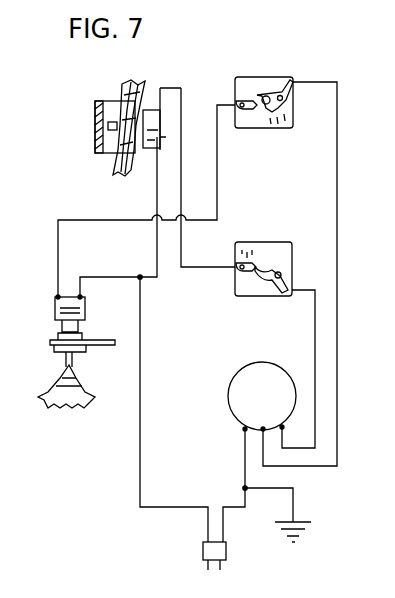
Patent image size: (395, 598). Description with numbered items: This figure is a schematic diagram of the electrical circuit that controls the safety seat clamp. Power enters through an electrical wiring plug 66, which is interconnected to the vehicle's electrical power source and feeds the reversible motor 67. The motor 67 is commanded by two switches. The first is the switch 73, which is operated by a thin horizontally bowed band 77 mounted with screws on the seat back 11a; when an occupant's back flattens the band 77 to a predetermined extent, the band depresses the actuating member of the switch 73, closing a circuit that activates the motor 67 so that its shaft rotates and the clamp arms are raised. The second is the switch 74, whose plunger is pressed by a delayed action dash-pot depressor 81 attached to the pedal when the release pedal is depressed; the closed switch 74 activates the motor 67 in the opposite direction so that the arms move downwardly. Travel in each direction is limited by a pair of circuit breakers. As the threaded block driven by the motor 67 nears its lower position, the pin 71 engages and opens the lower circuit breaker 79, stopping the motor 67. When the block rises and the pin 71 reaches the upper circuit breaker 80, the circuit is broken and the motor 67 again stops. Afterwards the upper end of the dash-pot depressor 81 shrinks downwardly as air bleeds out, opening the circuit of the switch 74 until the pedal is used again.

The seat back 11a is at (124, 88).
The electrical wiring plug 66 is at (203, 550).
The reversible motor 67 is at (237, 396).
The pin 71 is at (266, 103).
The switch 73 is at (147, 150).
The switch 74 is at (53, 307).
The thin horizontally bowed band 77 is at (97, 116).
The lower circuit breaker 79 is at (270, 248).
The upper circuit breaker 80 is at (247, 80).
The delayed action dash-pot depressor 81 is at (58, 378).